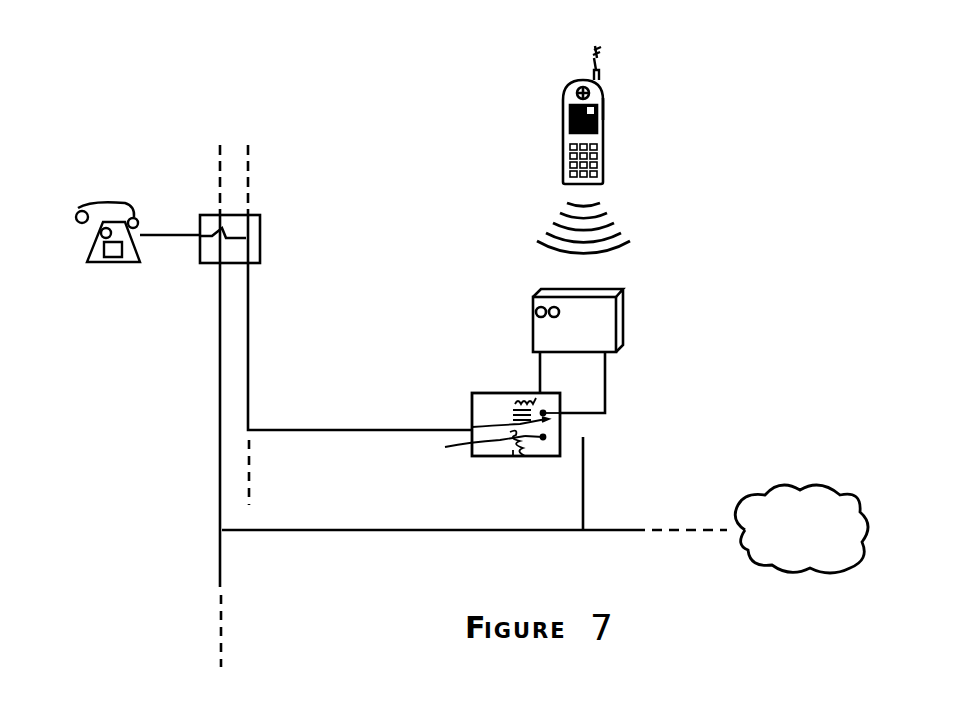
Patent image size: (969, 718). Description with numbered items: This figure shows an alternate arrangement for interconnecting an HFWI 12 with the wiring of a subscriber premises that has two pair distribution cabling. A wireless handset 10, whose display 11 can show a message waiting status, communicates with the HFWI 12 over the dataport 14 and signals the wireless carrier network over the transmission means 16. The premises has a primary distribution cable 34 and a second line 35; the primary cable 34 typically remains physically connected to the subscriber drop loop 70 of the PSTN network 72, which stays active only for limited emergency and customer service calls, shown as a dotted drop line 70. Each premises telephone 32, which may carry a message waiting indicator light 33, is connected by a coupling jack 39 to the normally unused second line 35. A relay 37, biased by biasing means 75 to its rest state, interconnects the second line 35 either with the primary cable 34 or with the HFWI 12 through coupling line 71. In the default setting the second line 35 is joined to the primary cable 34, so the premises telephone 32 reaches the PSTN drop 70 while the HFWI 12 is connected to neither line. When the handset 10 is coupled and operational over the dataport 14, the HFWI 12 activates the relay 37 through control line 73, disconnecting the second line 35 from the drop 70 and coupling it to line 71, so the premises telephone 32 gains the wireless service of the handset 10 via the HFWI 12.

The handset 10 is at (560, 108).
The transmission means 16 is at (600, 47).
The display 11 is at (604, 105).
The dataport 14 is at (640, 218).
The HFWI 12 is at (623, 318).
The control line 73 is at (541, 372).
The coupling line 71 is at (606, 378).
The relay 37 is at (495, 393).
The biasing means 75 is at (470, 450).
The premises telephone 32 is at (100, 265).
The message waiting indicator light 33 is at (88, 235).
The coupling jack 39 is at (262, 228).
The second line 35 is at (250, 348).
The premises wireline distribution cabling 34 is at (220, 378).
The subscriber drop loop 70 is at (630, 535).
The PSTN network 72 is at (805, 572).